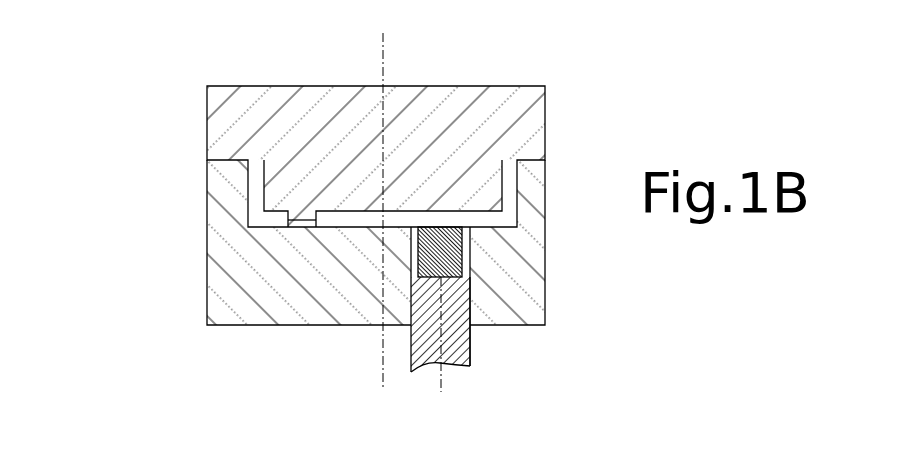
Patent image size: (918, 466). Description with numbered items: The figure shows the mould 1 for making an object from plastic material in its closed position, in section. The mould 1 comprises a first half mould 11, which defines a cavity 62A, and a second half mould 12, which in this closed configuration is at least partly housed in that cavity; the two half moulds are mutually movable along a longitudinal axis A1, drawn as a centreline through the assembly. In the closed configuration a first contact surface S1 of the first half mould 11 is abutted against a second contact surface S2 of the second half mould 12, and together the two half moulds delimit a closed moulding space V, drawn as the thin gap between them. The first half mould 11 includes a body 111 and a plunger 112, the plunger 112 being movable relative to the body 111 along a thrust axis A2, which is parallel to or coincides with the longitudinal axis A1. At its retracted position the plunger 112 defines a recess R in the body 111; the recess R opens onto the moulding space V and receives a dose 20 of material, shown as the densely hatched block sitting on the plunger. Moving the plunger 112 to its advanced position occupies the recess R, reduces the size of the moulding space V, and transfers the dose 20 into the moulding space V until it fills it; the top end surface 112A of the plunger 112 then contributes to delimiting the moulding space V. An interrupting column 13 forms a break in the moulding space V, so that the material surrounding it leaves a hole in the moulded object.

The mould 1 is at (137, 108).
The first half mould 11 is at (584, 201).
The second half mould 12 is at (589, 112).
The interrupting column 13 is at (265, 220).
The dose 20 is at (413, 252).
The cavity 62A is at (485, 219).
The body 111 is at (328, 302).
The plunger 112 is at (462, 347).
The top end surface 112A is at (473, 270).
The longitudinal axis A1 is at (383, 58).
The thrust axis A2 is at (441, 388).
The recess R is at (467, 252).
The first contact surface S1 is at (290, 232).
The second contact surface S2 is at (289, 245).
The closed moulding space V is at (340, 237).